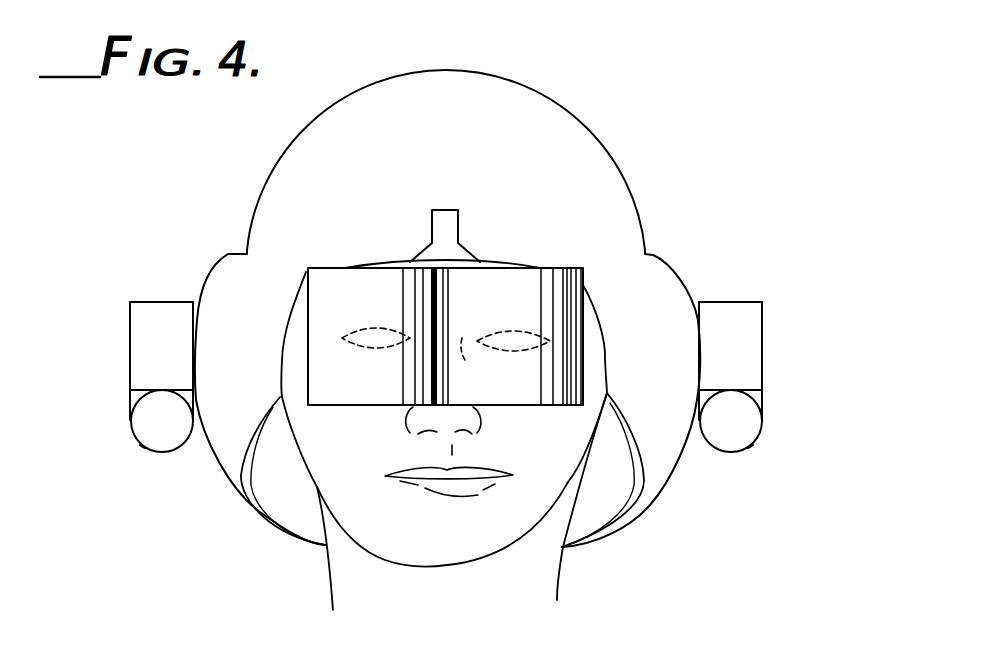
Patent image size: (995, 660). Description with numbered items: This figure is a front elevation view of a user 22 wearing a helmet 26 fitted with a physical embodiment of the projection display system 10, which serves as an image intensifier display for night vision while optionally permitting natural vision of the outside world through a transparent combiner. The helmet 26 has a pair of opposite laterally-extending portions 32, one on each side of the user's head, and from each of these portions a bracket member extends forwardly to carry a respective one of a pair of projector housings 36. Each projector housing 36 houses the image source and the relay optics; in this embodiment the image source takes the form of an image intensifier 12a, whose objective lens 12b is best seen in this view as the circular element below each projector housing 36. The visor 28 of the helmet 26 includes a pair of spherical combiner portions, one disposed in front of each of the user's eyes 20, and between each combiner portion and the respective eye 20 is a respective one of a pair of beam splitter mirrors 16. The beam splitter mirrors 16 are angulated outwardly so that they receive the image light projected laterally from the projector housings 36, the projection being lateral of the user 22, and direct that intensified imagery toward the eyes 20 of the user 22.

The projection display system 10 is at (160, 246).
The image intensifier 12a is at (136, 458).
The objective lens 12b is at (140, 424).
The beam splitter mirrors 16 is at (345, 282).
The user's eyes 20 is at (380, 360).
The user 22 is at (360, 549).
The helmet 26 is at (596, 152).
The visor 28 is at (616, 303).
The laterally-extending portions 32 is at (228, 270).
The projector housings 36 is at (142, 320).